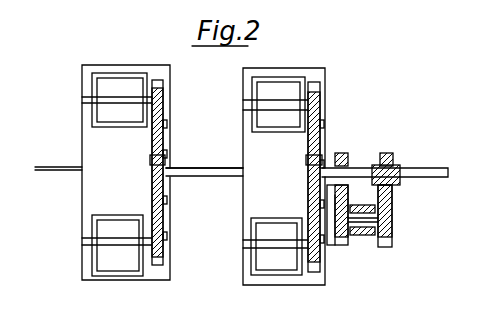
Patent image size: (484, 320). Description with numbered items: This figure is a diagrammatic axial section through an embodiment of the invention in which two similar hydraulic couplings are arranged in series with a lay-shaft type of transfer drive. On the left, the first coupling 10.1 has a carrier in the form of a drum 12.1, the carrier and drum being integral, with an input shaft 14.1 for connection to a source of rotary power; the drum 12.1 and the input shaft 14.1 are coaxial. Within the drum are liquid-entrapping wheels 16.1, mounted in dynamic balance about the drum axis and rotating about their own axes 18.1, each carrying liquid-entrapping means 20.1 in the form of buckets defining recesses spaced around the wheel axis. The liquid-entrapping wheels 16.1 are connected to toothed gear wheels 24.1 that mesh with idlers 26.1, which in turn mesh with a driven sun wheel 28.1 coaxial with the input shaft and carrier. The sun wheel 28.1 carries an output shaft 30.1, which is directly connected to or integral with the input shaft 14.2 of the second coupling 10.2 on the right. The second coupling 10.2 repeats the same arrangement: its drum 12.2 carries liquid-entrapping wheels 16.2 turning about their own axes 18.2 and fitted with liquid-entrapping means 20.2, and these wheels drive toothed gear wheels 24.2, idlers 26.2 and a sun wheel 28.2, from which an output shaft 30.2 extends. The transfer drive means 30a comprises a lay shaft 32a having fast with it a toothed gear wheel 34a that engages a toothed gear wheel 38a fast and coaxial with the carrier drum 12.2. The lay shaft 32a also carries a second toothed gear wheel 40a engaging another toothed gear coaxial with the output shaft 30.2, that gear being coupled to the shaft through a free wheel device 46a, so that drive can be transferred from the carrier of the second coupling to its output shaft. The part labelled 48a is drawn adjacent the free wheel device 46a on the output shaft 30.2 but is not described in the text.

The first coupling 10.1 is at (78, 122).
The drum 12.1 is at (81, 193).
The input shaft 14.1 is at (49, 167).
The liquid-entrapping wheels 16.1 is at (143, 73).
The axes of the liquid-entrapping wheels 18.1 is at (89, 97).
The liquid-entrapping means 20.1 is at (128, 127).
The toothed gear wheels 24.1 is at (163, 87).
The idlers 26.1 is at (167, 125).
The sun wheel 28.1 is at (152, 160).
The output shaft 30.1 is at (192, 167).
The input shaft 14.2 is at (232, 177).
The second coupling 10.2 is at (340, 128).
The drum 12.2 is at (243, 215).
The liquid-entrapping wheels 16.2 is at (305, 73).
The axes of the liquid-entrapping wheels 18.2 is at (256, 105).
The liquid-entrapping means 20.2 is at (257, 220).
The toothed gear wheels 24.2 is at (318, 87).
The idlers 26.2 is at (310, 203).
The sun wheel 28.2 is at (318, 162).
The output shaft 30.2 is at (443, 176).
The transfer drive means 30a is at (388, 252).
The lay shaft 32a is at (377, 220).
The toothed gear wheel 34a is at (344, 246).
The toothed gear wheel 38a is at (345, 156).
The toothed gear wheel 40a is at (393, 236).
The free wheel device 46a is at (396, 168).
The coupling nut 48a is at (392, 158).